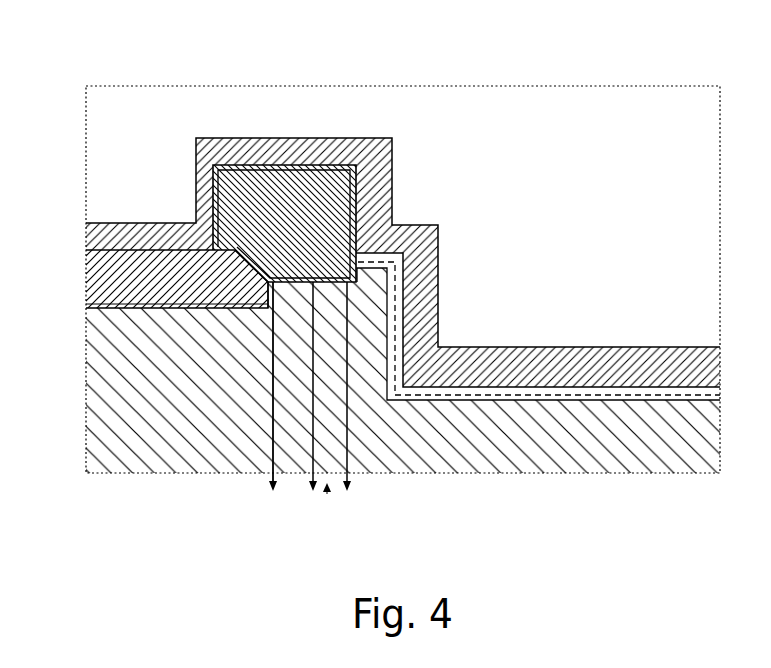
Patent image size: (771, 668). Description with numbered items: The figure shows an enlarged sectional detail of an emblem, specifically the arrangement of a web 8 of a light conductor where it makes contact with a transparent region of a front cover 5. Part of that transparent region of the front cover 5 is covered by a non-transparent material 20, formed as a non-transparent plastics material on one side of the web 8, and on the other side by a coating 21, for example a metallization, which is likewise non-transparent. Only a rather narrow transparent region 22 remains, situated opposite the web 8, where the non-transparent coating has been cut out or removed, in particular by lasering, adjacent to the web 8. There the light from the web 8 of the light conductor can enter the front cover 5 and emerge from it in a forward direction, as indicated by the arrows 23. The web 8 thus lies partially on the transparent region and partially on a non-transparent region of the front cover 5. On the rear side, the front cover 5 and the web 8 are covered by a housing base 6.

The front cover 5 is at (86, 422).
The housing base 6 is at (215, 150).
The web 8 is at (292, 190).
The non-transparent material 20 is at (86, 282).
The coating 21 is at (395, 292).
The transparent region 22 is at (297, 283).
The arrows 23 is at (327, 493).